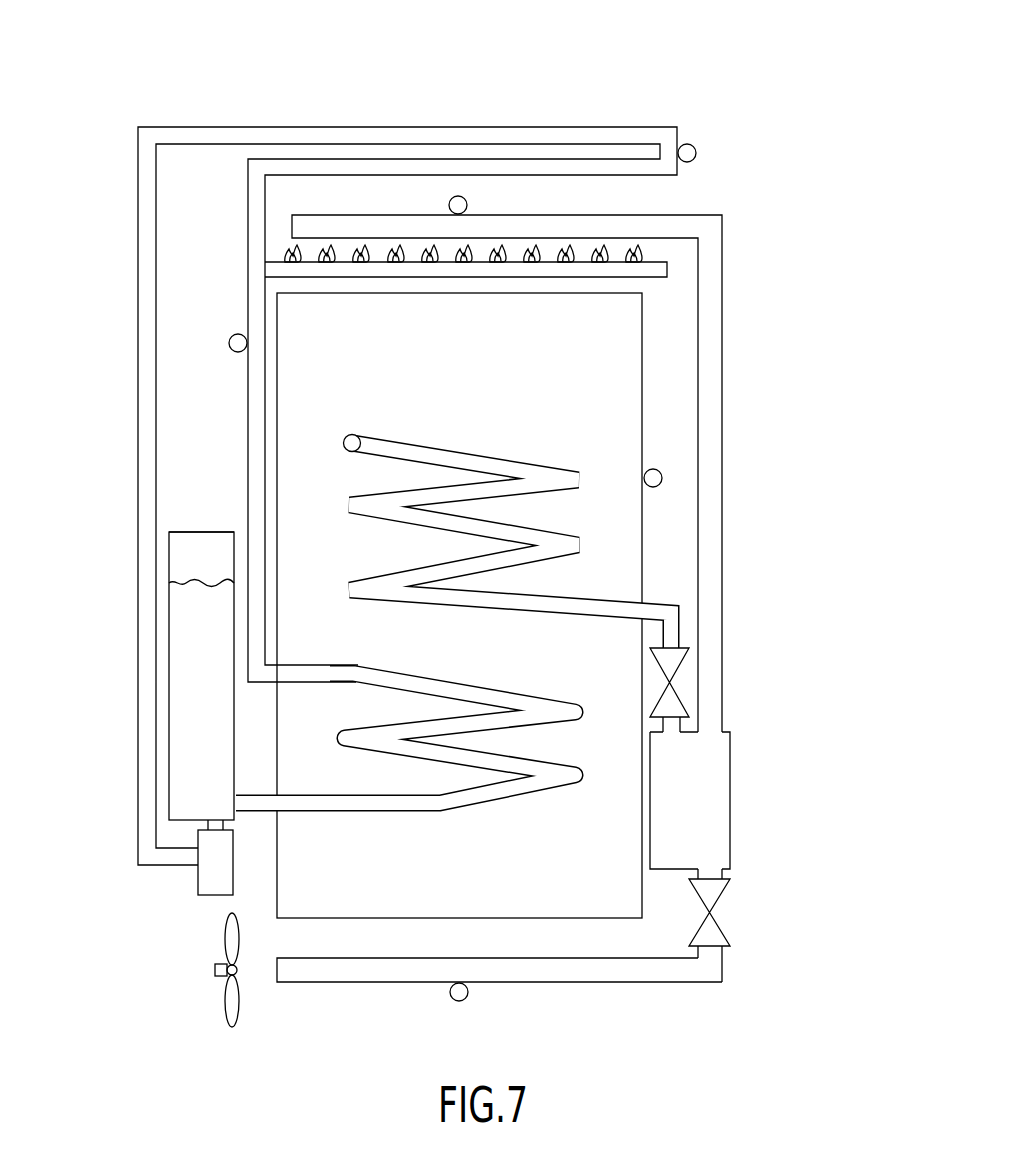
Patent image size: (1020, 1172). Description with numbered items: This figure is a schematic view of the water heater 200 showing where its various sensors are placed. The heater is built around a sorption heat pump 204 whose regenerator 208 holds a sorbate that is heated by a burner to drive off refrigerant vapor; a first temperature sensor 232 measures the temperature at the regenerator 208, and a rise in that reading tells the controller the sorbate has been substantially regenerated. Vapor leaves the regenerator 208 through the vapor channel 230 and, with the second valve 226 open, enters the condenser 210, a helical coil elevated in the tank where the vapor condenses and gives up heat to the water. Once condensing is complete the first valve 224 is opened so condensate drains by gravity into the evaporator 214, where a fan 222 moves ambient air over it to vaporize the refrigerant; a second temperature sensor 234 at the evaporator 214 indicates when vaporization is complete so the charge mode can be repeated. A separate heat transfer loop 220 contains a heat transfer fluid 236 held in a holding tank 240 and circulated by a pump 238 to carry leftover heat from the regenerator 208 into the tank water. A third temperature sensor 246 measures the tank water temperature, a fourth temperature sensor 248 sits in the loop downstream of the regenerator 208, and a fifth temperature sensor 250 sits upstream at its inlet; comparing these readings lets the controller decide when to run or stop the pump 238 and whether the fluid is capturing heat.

The water heater 200 is at (602, 88).
The sorption heat pump 204 is at (748, 322).
The regenerator 208 is at (647, 220).
The condenser 210 is at (486, 452).
The evaporator 214 is at (641, 975).
The heat transfer loop 220 is at (127, 308).
The fan 222 is at (230, 1004).
The first valve 224 is at (713, 932).
The second valve 226 is at (662, 663).
The vapor channel 230 is at (722, 390).
The first temperature sensor 232 is at (467, 205).
The second temperature sensor 234 is at (466, 998).
The heat transfer fluid 236 is at (193, 758).
The pump 238 is at (210, 882).
The holding tank 240 is at (203, 530).
The third temperature sensor 246 is at (656, 470).
The fourth temperature sensor 248 is at (236, 352).
The fifth temperature sensor 250 is at (696, 151).